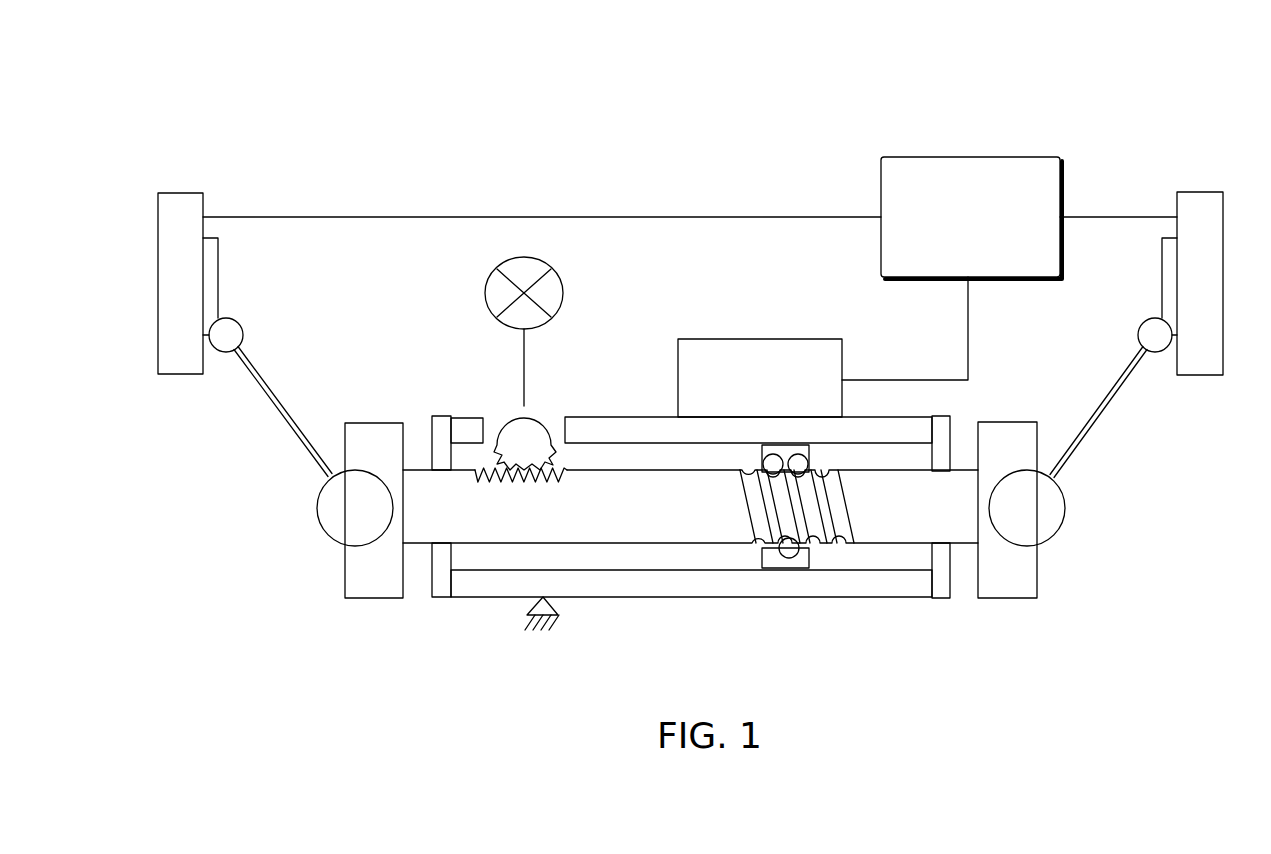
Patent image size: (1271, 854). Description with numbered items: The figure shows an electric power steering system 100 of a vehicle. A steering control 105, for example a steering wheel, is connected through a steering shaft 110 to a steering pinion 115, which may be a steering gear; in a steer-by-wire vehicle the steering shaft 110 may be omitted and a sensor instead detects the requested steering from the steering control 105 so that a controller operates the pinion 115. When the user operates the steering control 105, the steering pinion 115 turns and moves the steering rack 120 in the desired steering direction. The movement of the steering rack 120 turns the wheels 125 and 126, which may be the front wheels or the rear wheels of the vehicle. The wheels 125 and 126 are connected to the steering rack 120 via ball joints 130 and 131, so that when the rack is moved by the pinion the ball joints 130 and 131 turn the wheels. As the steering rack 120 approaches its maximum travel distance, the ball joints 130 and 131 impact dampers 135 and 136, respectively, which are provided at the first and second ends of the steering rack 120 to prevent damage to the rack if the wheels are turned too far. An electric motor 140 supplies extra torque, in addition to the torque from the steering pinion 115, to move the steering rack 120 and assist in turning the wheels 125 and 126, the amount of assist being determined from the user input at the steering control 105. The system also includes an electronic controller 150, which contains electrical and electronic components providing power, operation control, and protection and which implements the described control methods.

The electric power steering system 100 is at (158, 78).
The steering control 105 is at (485, 293).
The steering shaft 110 is at (522, 360).
The steering pinion 115 is at (505, 412).
The steering rack 120 is at (630, 543).
The wheel 125 is at (178, 193).
The wheel 126 is at (1200, 192).
The ball joint 130 is at (323, 540).
The ball joint 131 is at (1046, 540).
The damper 135 is at (442, 598).
The damper 136 is at (940, 598).
The electric motor 140 is at (678, 380).
The electronic controller 150 is at (968, 157).